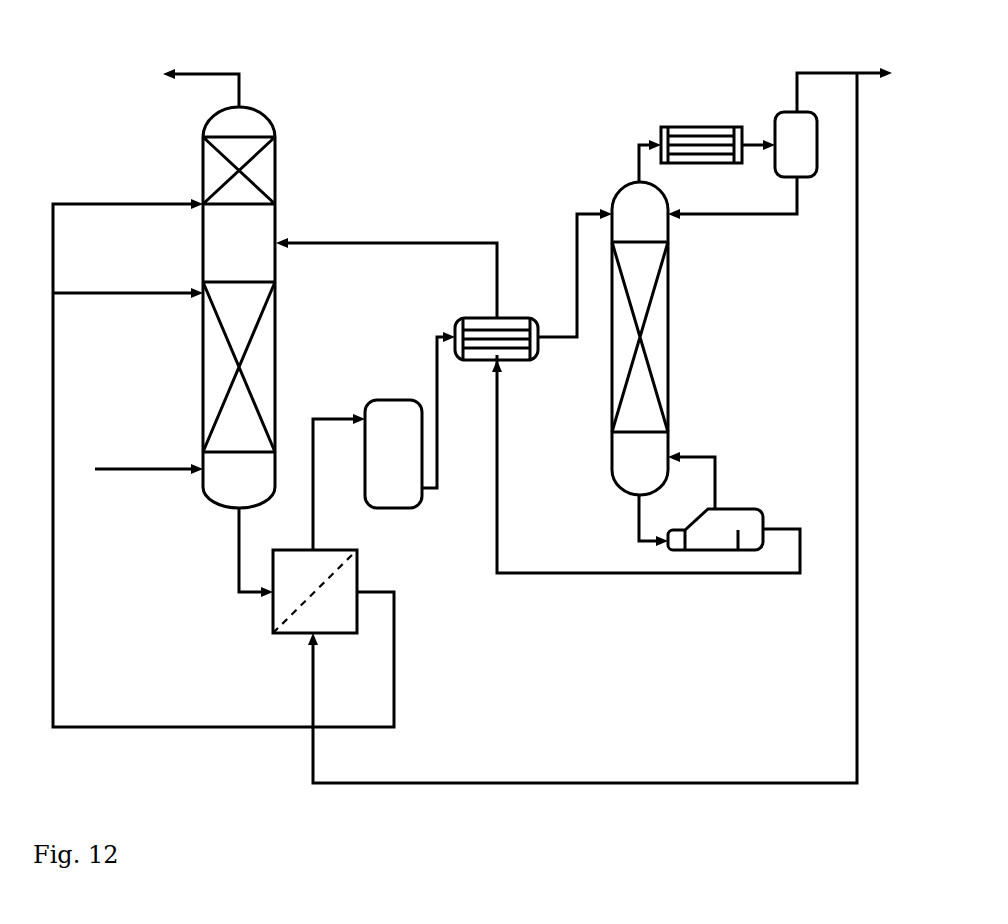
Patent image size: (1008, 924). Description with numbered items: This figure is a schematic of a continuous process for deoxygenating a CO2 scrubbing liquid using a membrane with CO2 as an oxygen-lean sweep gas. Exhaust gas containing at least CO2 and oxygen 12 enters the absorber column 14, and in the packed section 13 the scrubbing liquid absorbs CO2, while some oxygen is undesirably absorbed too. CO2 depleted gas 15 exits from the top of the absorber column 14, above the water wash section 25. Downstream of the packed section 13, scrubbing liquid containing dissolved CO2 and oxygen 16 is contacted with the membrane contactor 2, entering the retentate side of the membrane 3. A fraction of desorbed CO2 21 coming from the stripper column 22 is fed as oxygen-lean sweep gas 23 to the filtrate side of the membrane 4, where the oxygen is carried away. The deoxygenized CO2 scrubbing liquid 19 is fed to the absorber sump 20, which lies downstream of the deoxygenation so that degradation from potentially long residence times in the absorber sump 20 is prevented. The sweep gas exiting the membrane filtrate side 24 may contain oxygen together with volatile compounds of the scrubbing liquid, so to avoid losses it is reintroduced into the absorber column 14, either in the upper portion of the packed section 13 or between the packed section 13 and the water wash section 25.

The membrane contactor 2 is at (295, 624).
The retentate side of the membrane 3 is at (315, 591).
The filtrate side of the membrane 4 is at (339, 617).
The exhaust gas containing CO2 and O2 12 is at (151, 470).
The packed section 13 is at (265, 367).
The absorber column 14 is at (202, 237).
The CO2 depleted gas 15 is at (200, 72).
The scrubbing liquid containing dissolved CO2 and oxygen 16 is at (238, 574).
The deoxygenized CO2 scrubbing liquid 19 is at (315, 440).
The absorber sump 20 is at (393, 454).
The desorbed CO2 21 is at (832, 73).
The stripper column 22 is at (668, 232).
The oxygen-lean sweep gas 23 is at (855, 348).
The sweep gas exiting the membrane filtrate side 24 is at (147, 733).
The water wash section 25 is at (265, 176).